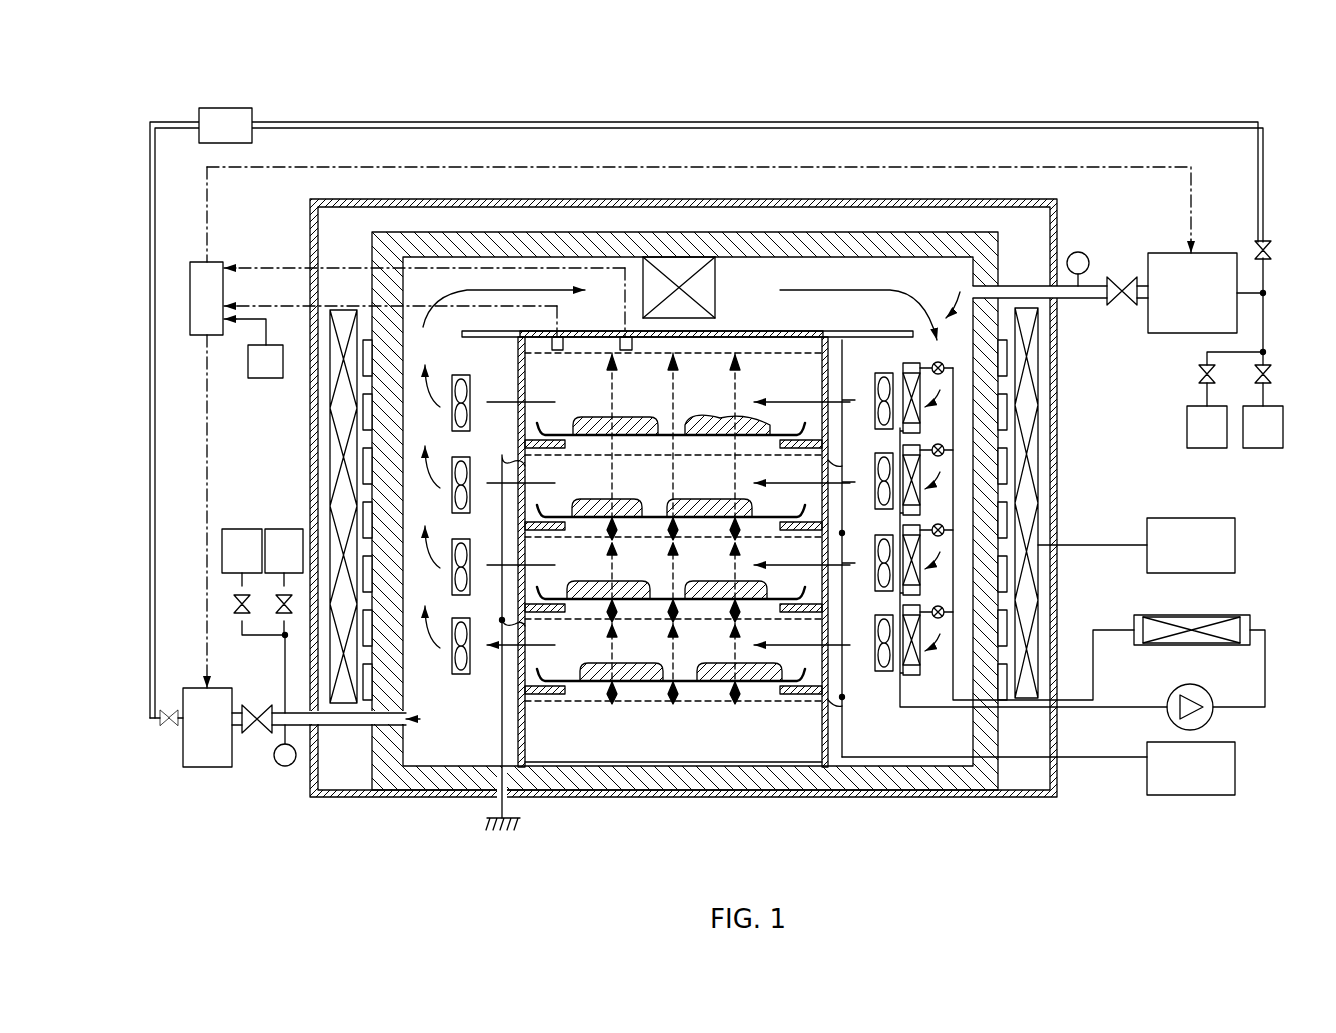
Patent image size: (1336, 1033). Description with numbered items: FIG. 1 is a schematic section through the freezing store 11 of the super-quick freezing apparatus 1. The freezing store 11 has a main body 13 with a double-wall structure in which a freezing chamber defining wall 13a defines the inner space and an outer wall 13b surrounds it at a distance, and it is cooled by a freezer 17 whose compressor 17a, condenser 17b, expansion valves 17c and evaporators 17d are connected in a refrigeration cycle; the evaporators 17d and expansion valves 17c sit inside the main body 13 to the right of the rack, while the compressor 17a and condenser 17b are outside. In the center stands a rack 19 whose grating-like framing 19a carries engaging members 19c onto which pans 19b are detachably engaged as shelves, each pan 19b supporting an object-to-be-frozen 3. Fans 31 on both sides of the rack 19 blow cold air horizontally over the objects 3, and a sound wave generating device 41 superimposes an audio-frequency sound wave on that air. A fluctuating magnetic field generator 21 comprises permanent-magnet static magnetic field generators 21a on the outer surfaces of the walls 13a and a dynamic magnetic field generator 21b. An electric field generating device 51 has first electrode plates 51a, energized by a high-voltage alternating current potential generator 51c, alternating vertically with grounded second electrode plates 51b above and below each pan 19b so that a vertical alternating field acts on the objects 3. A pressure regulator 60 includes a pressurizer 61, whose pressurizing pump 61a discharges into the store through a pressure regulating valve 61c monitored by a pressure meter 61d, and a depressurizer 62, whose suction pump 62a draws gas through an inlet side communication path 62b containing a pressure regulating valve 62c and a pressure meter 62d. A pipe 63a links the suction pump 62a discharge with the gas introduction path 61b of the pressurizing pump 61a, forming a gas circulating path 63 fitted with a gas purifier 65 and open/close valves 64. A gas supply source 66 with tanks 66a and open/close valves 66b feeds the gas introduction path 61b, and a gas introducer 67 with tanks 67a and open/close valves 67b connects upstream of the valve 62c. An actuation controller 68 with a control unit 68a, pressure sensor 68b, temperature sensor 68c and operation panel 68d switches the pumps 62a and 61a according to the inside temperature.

The super-quick freezing apparatus 1 is at (143, 148).
The object-to-be-frozen 3 is at (632, 683).
The freezing store 11 is at (306, 222).
The main body 13 is at (1140, 345).
The freezing chamber defining wall 13a is at (1000, 356).
The outer wall 13b is at (1053, 385).
The freezer 17 is at (1116, 552).
The compressor 17a is at (1210, 718).
The condenser 17b is at (1195, 617).
The expansion valve 17c is at (944, 606).
The evaporator 17d is at (920, 657).
The rack 19 is at (590, 618).
The framing 19a is at (503, 714).
The pan 19b is at (538, 672).
The engaging member 19c is at (477, 822).
The fluctuating magnetic field generator 21 is at (775, 505).
The static magnetic field generator 21a is at (357, 400).
The dynamic magnetic field generator 21b is at (335, 428).
The fan 31 is at (452, 660).
The sound wave generating device 41 is at (716, 316).
The electric field generating device 51 is at (848, 614).
The first electrode plate 51a is at (506, 803).
The second electrode plate 51b is at (690, 622).
The high-voltage alternating current potential generator 51c is at (1153, 796).
The pressure regulator 60 is at (1154, 295).
The pressurizer 61 is at (1154, 295).
The pressurizing pump 61a is at (1220, 253).
The gas introduction path 61b is at (1250, 292).
The pressure regulating valve 61c is at (1122, 277).
The pressure meter 61d is at (1078, 252).
The depressurizer 62 is at (263, 743).
The suction pump 62a is at (208, 768).
The inlet side communication path 62b is at (258, 704).
The pressure regulating valve 62c is at (258, 734).
The pressure meter 62d is at (285, 767).
The gas circulating path 63 is at (686, 411).
The pipe 63a is at (648, 121).
The open/close valve 64 is at (160, 726).
The gas purifier 65 is at (232, 108).
The gas supply source 66 is at (1261, 423).
The tank 66a is at (1275, 452).
The open/close valve 66b is at (1266, 372).
The gas introducer 67 is at (195, 592).
The tank 67a is at (295, 522).
The open/close valve 67b is at (280, 612).
The actuation controller 68 is at (636, 427).
The control unit 68a is at (196, 320).
The pressure sensor 68b is at (626, 351).
The temperature sensor 68c is at (557, 351).
The operation panel 68d is at (248, 362).